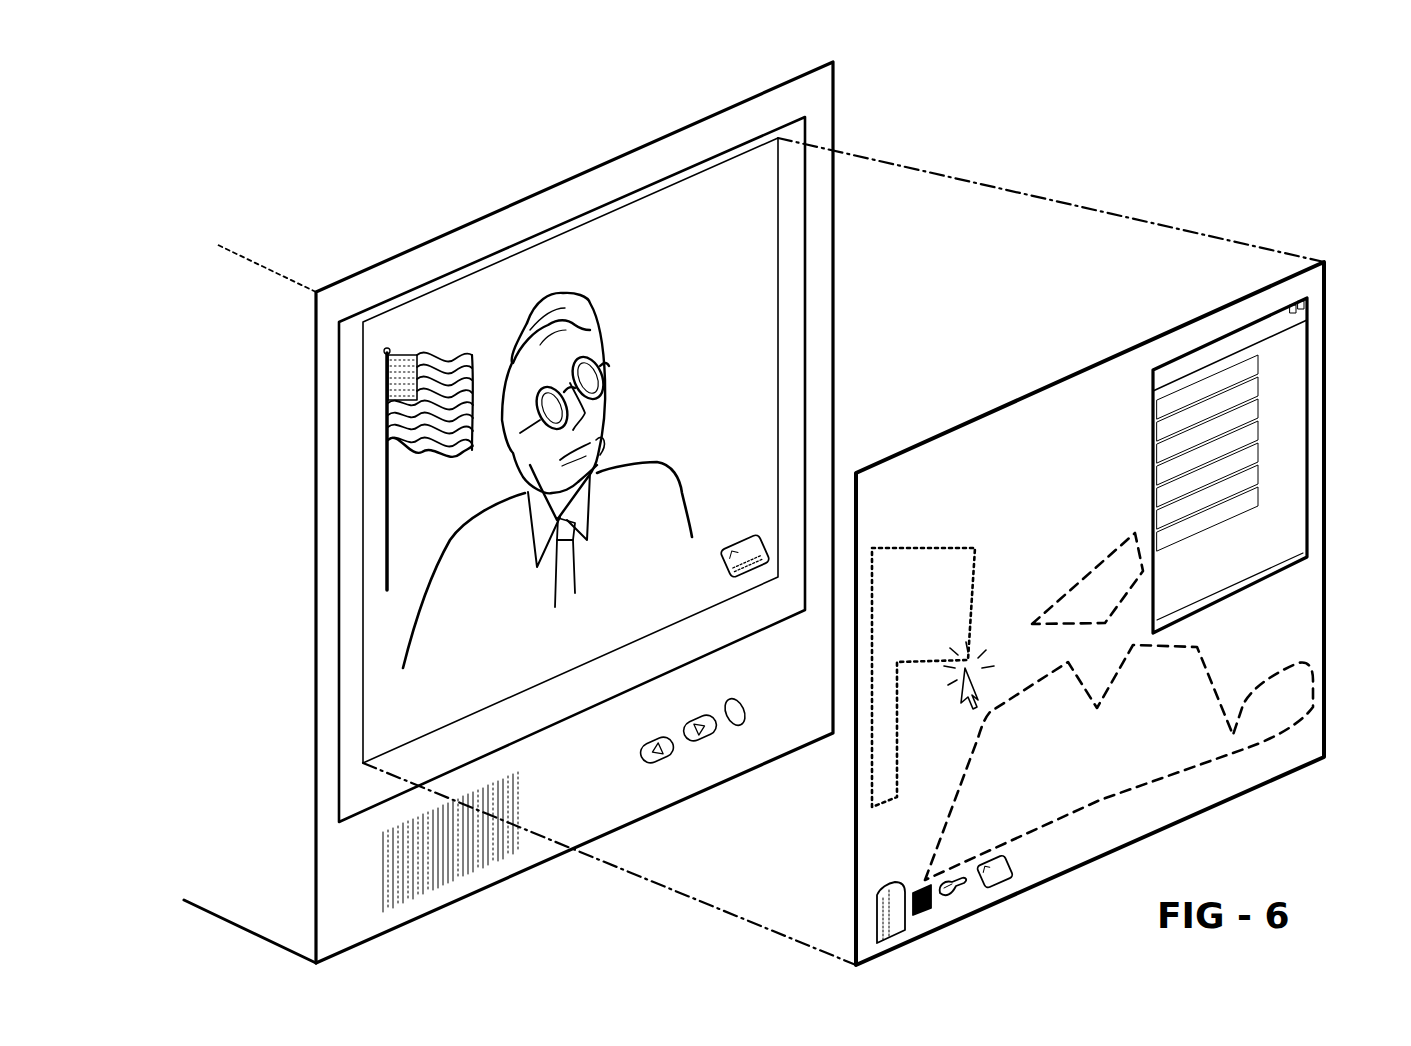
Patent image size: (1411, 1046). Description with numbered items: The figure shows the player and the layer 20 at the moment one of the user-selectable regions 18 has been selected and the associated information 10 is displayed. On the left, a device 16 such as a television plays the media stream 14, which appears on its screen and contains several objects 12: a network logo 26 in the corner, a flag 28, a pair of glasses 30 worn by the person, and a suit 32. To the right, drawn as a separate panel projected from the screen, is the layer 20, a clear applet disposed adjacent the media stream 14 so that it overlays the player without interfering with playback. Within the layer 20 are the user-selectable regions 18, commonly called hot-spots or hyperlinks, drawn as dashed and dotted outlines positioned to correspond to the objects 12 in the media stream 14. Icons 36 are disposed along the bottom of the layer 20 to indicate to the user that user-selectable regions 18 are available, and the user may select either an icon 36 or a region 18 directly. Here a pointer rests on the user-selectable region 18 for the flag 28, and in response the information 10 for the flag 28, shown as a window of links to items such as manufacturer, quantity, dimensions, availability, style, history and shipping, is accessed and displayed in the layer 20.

The information 10 is at (1300, 363).
The object 12 is at (690, 348).
The media stream 14 is at (786, 296).
The device 16 is at (822, 78).
The user-selectable region 18 is at (938, 557).
The layer 20 is at (1095, 392).
The network logo 26 is at (756, 540).
The flag 28 is at (421, 358).
The pair of glasses 30 is at (613, 368).
The suit 32 is at (641, 480).
The icon 36 is at (893, 943).